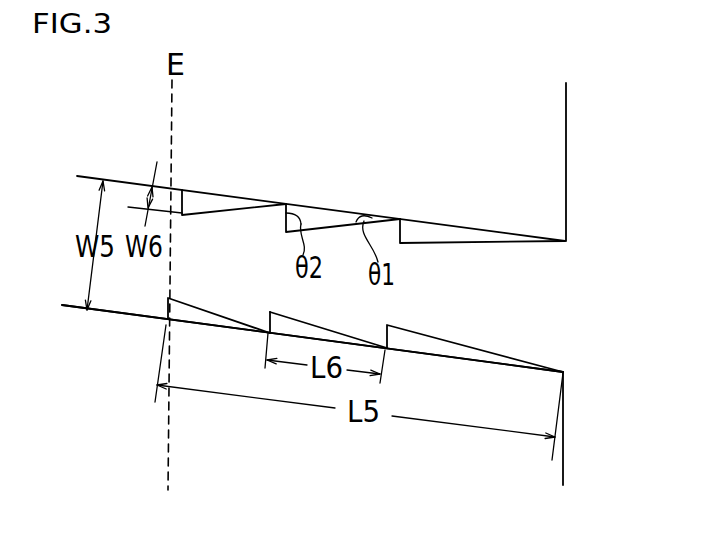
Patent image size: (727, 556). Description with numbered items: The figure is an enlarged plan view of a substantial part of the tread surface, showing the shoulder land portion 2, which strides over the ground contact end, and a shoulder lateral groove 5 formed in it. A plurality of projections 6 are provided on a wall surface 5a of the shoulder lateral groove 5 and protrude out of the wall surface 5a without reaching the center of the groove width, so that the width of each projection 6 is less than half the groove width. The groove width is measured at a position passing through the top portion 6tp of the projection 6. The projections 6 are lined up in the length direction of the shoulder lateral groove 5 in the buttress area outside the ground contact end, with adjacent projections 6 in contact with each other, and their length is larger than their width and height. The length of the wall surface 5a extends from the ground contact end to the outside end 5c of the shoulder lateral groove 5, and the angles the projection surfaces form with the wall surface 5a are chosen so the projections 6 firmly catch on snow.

The shoulder land portion 2 is at (263, 442).
The shoulder lateral groove 5 is at (552, 318).
The wall surface 5a is at (462, 228).
The outside end 5c is at (567, 372).
The projection 6 is at (207, 216).
The top portion 6tp is at (270, 311).